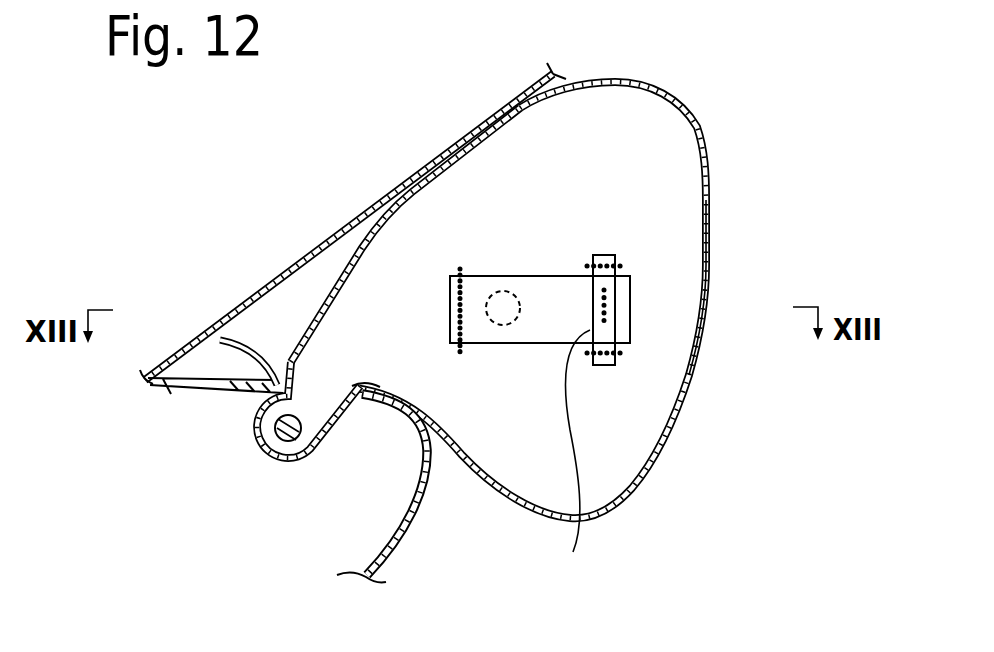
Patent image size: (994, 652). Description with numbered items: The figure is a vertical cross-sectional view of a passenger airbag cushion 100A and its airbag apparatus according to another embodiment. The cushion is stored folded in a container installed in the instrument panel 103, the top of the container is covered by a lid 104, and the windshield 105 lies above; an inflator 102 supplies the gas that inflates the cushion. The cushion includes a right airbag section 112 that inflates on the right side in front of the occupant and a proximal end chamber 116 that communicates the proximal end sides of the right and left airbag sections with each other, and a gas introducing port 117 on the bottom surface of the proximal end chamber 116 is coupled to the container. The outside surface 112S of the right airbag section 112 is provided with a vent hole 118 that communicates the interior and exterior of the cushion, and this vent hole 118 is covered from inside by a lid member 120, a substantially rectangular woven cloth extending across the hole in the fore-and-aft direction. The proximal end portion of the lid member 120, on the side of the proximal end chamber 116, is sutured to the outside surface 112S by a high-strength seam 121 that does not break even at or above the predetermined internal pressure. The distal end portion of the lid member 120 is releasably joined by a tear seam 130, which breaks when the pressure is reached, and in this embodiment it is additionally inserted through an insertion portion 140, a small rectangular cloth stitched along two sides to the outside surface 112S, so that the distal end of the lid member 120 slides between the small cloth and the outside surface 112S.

The passenger airbag cushion 100A is at (588, 259).
The inflator 102 is at (275, 436).
The instrument panel 103 is at (421, 453).
The lid 104 is at (262, 355).
The windshield 105 is at (265, 288).
The right airbag section 112 is at (707, 170).
The outside surface 112S is at (653, 225).
The proximal end chamber 116 is at (337, 334).
The gas introducing port 117 is at (332, 392).
The vent hole 118 is at (521, 303).
The lid member 120 is at (503, 345).
The seam 121 is at (457, 292).
The tear seam 130 is at (607, 305).
The insertion portion 140 is at (573, 459).